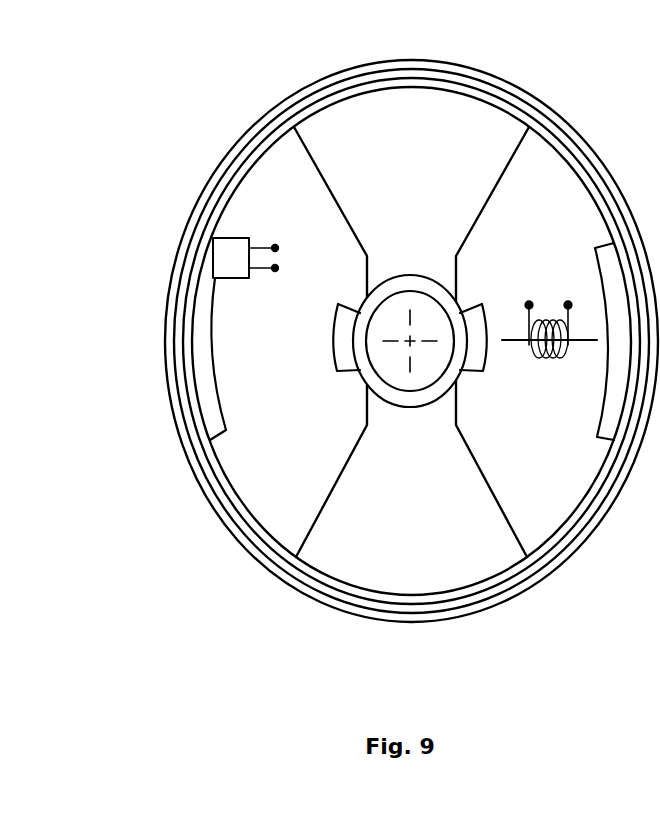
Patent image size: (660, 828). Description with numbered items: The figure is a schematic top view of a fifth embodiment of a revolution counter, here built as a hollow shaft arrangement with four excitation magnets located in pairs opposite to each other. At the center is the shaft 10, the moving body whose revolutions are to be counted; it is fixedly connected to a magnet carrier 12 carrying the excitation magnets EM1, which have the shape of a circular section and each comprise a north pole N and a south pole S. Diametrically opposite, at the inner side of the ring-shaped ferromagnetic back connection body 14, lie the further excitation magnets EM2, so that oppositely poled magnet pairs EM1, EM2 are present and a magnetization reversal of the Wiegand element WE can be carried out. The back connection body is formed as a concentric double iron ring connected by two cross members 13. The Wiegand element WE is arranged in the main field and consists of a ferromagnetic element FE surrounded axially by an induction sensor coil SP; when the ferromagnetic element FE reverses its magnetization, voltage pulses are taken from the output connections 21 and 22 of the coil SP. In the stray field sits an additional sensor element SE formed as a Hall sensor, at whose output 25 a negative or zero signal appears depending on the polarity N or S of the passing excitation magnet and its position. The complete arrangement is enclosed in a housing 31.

The shaft 10 is at (430, 315).
The magnet carrier 12 is at (513, 567).
The cross members 13 is at (407, 482).
The ferromagnetic back connection body 14 is at (606, 202).
The housing 31 is at (582, 537).
The output 25 is at (278, 258).
The output connection 21 is at (530, 311).
The output connection 22 is at (547, 278).
The additional sensor element SE is at (233, 258).
The Wiegand element WE is at (549, 290).
The ferromagnetic element FE is at (522, 345).
The sensor coil SP is at (552, 352).
The excitation magnet EM1 is at (345, 357).
The excitation magnet EM2 is at (203, 393).
The north pole N is at (463, 333).
The south pole S is at (357, 333).